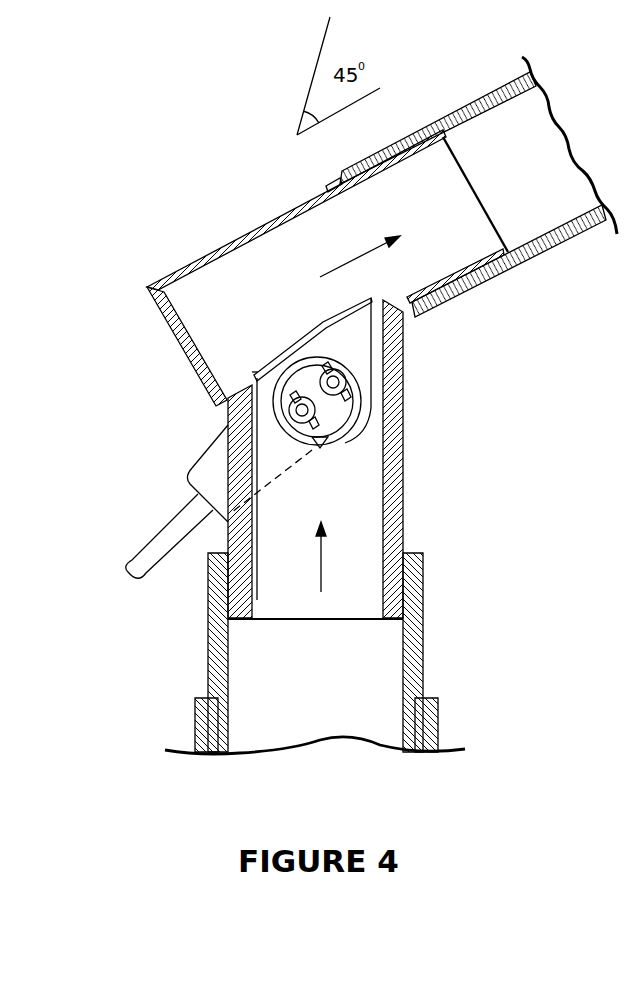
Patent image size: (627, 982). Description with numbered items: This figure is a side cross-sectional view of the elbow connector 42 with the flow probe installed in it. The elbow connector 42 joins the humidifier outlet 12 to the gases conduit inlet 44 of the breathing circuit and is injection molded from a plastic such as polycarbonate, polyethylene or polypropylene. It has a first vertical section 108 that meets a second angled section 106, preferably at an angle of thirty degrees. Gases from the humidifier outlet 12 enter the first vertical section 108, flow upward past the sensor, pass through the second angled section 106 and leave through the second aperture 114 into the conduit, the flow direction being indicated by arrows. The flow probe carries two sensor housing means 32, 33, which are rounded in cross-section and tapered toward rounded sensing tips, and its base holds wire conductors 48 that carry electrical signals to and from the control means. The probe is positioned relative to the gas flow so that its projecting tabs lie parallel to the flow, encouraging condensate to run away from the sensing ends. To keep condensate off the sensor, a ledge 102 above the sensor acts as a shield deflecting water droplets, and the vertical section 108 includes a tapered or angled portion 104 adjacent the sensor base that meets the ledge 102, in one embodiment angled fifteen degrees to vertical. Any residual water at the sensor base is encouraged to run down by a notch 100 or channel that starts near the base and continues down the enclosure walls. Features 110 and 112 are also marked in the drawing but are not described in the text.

The humidifier outlet 12 is at (205, 667).
The sensor housing means 32 is at (310, 417).
The sensor housing means 33 is at (350, 392).
The elbow connector 42 is at (406, 497).
The gases conduit inlet 44 is at (450, 112).
The wire conductors 48 is at (142, 540).
The notch 100 is at (318, 441).
The ledge 102 is at (255, 376).
The angled portion 104 is at (350, 343).
The second section 106 is at (255, 280).
The first vertical section 108 is at (280, 540).
The sleeve 110 is at (337, 177).
The bottom plate 112 is at (360, 620).
The second aperture 114 is at (483, 205).